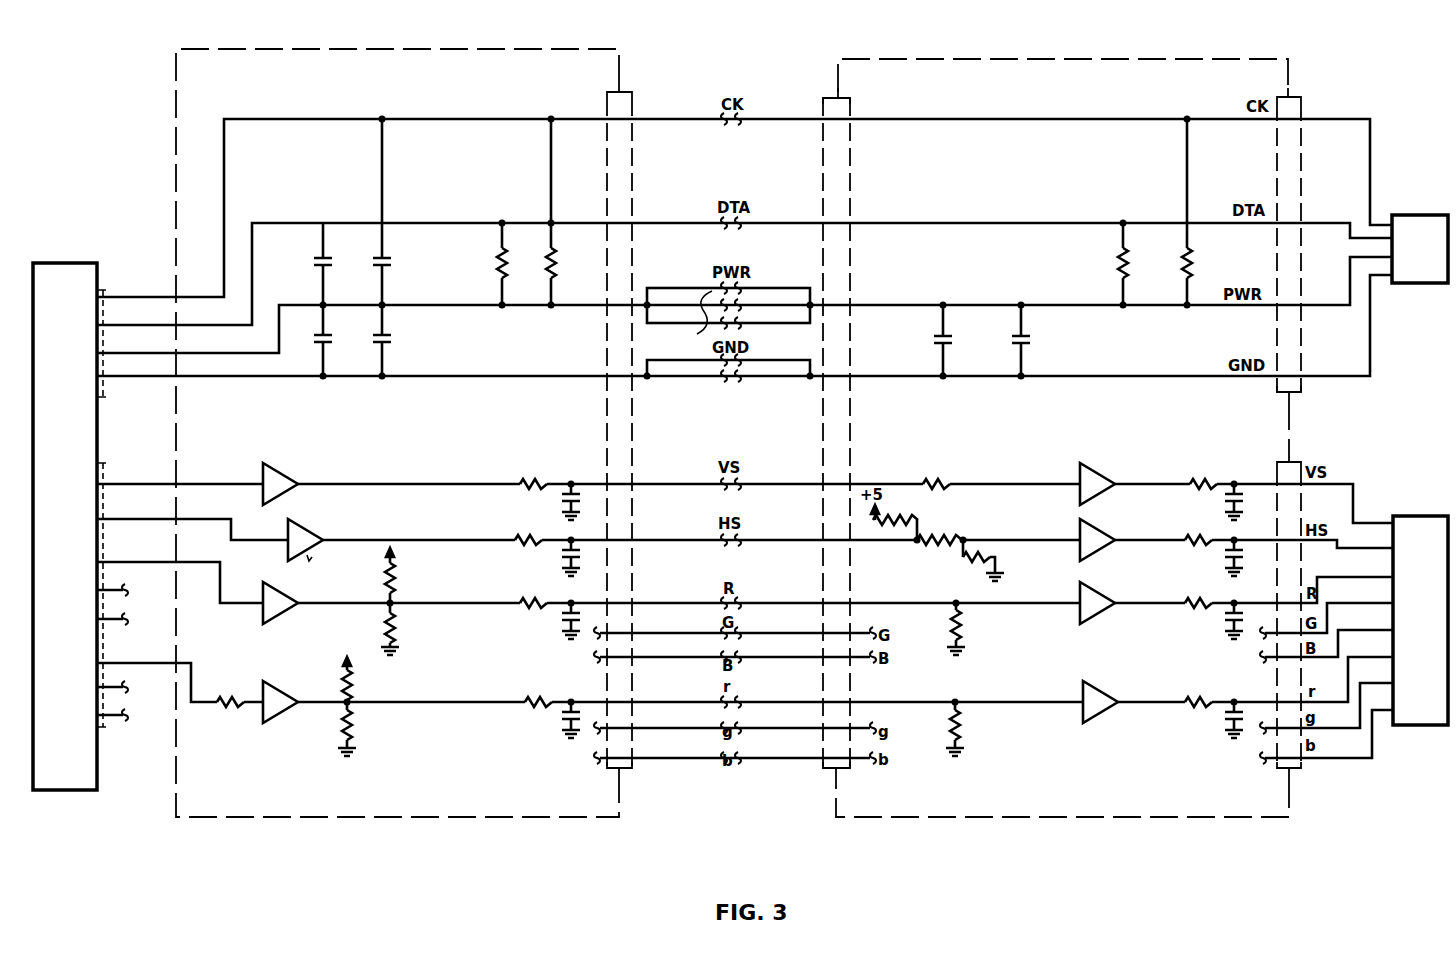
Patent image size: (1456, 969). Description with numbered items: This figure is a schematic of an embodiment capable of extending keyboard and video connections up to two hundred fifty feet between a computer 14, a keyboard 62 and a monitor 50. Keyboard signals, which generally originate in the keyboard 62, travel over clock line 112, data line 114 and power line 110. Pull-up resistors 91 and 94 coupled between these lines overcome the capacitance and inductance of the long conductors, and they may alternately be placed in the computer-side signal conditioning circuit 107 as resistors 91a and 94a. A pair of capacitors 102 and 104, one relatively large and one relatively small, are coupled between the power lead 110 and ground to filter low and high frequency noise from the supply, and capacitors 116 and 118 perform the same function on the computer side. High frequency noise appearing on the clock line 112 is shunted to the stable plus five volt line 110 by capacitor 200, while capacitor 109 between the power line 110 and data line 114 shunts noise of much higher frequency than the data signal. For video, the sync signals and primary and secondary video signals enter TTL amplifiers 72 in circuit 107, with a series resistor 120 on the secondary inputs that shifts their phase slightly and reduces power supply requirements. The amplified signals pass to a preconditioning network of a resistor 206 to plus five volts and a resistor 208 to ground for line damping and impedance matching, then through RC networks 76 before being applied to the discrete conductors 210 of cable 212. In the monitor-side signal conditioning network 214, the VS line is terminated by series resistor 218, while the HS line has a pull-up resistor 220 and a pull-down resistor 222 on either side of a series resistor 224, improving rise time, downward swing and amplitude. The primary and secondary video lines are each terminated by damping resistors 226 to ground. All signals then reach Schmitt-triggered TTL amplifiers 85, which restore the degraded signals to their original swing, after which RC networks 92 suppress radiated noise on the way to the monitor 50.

The computer 14 is at (80, 511).
The keyboard 62 is at (1420, 228).
The monitor 50 is at (1420, 604).
The signal conditioning circuit 107 is at (413, 446).
The signal conditioning network 214 is at (1063, 433).
The cable 212 is at (699, 70).
The conductors 210 is at (657, 223).
The clock line 112 is at (744, 194).
The data line 114 is at (744, 257).
The power line 110 is at (744, 305).
The capacitor 109 is at (316, 252).
The capacitor 200 is at (389, 256).
The capacitor 116 is at (314, 344).
The capacitor 118 is at (390, 344).
The capacitor 102 is at (934, 336).
The capacitor 104 is at (1028, 340).
The pull-up resistor 91a is at (495, 266).
The pull-up resistor 94a is at (556, 268).
The pull-up resistor 91 is at (1201, 264).
The pull-up resistor 94 is at (1116, 267).
The TTL amplifier 72 is at (293, 585).
The TTL amplifier 85 is at (1111, 585).
The RC network 76 is at (547, 512).
The RC network 92 is at (1212, 511).
The series resistor 120 is at (229, 712).
The resistor 206 is at (396, 589).
The resistor 208 is at (396, 619).
The series resistor 218 is at (937, 479).
The pull-up resistor 220 is at (903, 519).
The series resistor 224 is at (940, 551).
The pull-down resistor 222 is at (992, 557).
The damping resistor 226 is at (962, 623).